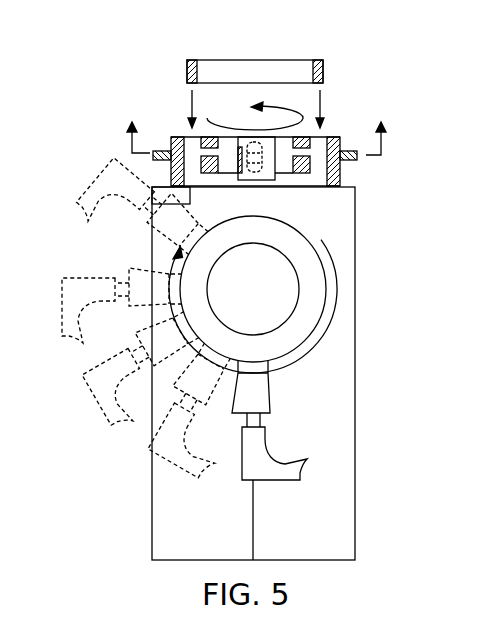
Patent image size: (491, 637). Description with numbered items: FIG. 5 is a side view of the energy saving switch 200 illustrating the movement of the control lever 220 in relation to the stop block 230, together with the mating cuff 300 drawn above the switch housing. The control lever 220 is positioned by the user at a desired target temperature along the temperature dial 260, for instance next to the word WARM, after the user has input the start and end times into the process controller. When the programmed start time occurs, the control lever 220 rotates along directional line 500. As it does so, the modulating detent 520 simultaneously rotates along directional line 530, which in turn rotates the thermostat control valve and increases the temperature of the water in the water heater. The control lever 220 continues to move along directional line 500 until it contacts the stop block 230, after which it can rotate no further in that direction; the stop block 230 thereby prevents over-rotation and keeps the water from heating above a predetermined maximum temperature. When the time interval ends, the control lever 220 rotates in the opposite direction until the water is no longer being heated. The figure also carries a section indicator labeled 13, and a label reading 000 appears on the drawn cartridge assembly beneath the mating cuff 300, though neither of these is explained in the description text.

The energy saving switch 200 is at (356, 535).
The control lever 220 is at (302, 472).
The stop block 230 is at (193, 202).
The temperature dial 260 is at (313, 257).
The directional line 500 is at (335, 300).
The modulating detent 520 is at (243, 143).
The directional line 530 is at (273, 107).
The mating cuff 300 is at (317, 60).
The valve cartridge assembly 000 is at (332, 137).
The section line 13 is at (257, 138).